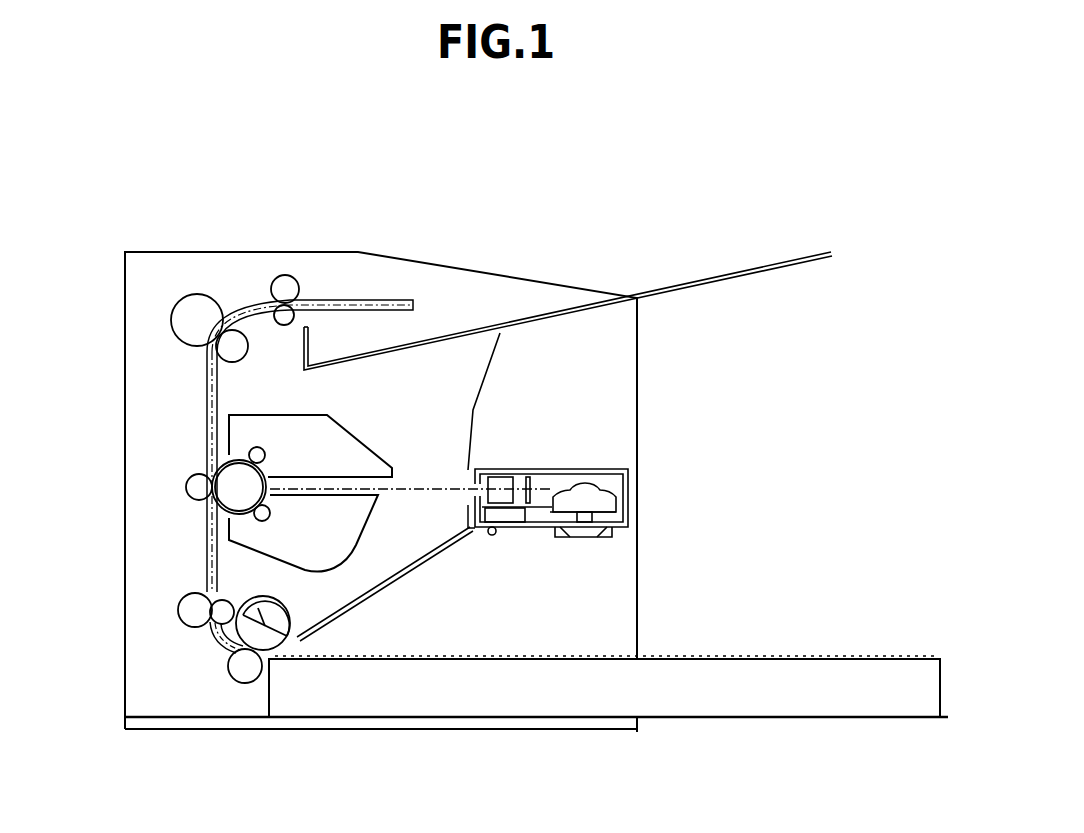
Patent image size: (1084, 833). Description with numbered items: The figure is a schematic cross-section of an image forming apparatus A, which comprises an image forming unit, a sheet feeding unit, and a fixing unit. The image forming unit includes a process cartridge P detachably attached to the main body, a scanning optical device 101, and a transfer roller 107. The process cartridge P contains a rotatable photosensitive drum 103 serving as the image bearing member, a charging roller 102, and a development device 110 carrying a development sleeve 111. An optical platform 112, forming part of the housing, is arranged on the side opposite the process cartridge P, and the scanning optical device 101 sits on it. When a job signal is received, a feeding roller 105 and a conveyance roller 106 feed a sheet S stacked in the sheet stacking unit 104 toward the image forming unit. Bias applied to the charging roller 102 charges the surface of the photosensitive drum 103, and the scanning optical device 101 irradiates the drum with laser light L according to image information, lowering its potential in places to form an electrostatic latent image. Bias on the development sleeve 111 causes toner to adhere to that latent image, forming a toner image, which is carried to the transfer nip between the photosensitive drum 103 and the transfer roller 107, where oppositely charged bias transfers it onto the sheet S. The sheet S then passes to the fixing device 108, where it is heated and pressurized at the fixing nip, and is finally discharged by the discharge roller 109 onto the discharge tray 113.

The image forming apparatus A is at (457, 212).
The scanning optical device 101 is at (613, 483).
The charging roller 102 is at (258, 448).
The photosensitive drum 103 is at (232, 472).
The sheet stacking unit 104 is at (710, 719).
The feeding roller 105 is at (290, 604).
The conveyance roller 106 is at (192, 608).
The transfer roller 107 is at (197, 485).
The fixing device 108 is at (180, 322).
The discharge roller 109 is at (284, 288).
The development device 110 is at (350, 512).
The development sleeve 111 is at (270, 523).
The optical platform 112 is at (527, 528).
The discharge tray 113 is at (518, 320).
The sheet S is at (822, 657).
The laser light L is at (436, 489).
The process cartridge P is at (365, 427).